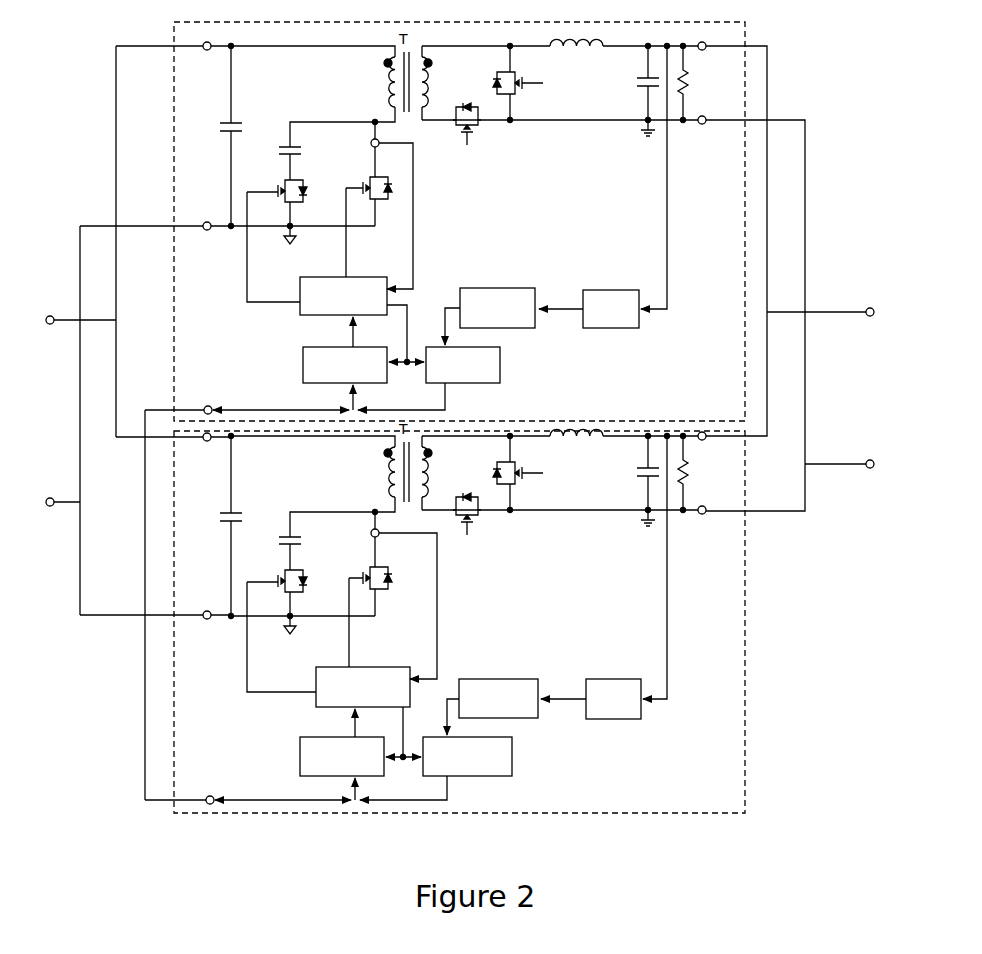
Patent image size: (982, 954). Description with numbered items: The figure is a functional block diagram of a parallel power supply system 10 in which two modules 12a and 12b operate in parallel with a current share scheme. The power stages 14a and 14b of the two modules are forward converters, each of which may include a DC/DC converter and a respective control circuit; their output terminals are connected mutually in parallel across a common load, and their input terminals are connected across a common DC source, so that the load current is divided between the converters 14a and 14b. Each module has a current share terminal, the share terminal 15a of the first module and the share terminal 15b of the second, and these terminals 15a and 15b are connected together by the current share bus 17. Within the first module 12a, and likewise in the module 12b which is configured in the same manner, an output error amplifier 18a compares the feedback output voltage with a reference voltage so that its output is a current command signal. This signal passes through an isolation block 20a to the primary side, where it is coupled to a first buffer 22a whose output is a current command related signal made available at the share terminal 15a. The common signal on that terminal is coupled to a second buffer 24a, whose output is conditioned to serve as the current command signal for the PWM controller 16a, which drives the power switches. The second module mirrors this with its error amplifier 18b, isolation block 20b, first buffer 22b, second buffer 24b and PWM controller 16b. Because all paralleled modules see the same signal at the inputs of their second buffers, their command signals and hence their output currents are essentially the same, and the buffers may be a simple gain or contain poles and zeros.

The power supply system 10 is at (871, 732).
The module 12a is at (748, 104).
The module 12b is at (748, 593).
The power stage 14a is at (312, 82).
The power stage 14b is at (312, 482).
The current share terminal 15a is at (206, 405).
The current share terminal 15b is at (208, 805).
The PWM controller 16a is at (376, 277).
The PWM controller 16b is at (366, 667).
The I_share bus 17 is at (143, 728).
The output error amplifier 18a is at (638, 327).
The output error amplifier 18b is at (641, 719).
The isolation block 20a is at (500, 288).
The isolation block 20b is at (500, 679).
The first buffer 22a is at (500, 365).
The first buffer 22b is at (512, 757).
The second buffer 24a is at (303, 362).
The second buffer 24b is at (300, 757).